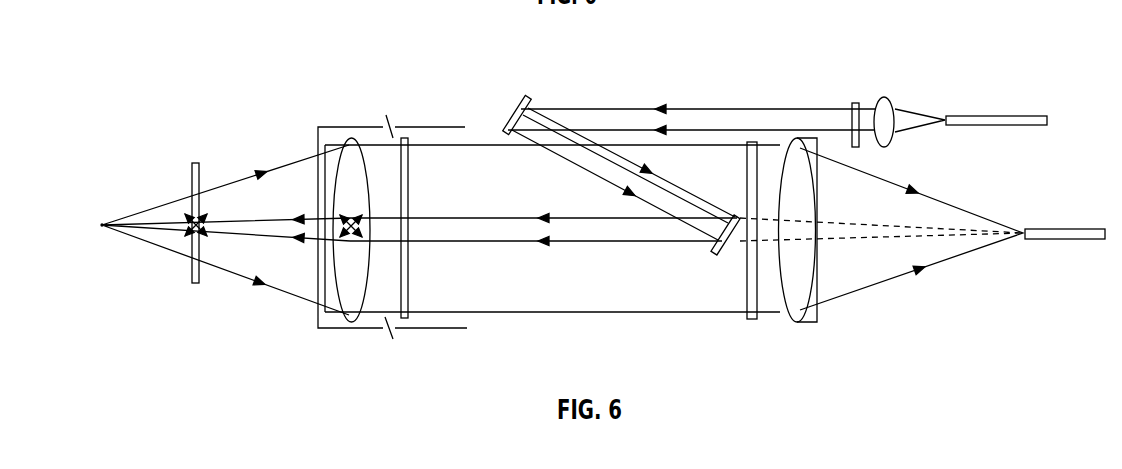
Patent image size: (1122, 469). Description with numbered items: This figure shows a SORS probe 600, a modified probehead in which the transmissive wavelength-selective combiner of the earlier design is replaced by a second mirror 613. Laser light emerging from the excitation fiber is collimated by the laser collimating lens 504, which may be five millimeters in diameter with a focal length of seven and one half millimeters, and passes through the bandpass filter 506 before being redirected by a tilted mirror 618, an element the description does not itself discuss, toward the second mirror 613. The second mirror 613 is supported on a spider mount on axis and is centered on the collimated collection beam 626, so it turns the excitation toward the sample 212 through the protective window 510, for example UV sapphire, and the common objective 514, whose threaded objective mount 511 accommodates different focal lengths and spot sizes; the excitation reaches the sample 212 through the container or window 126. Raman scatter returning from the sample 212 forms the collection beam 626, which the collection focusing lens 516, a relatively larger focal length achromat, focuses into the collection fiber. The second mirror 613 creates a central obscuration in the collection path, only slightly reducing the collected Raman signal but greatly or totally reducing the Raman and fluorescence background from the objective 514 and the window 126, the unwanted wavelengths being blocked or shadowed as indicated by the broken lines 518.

The SORS probe 600 is at (607, 63).
The sample 212 is at (95, 241).
The container or window 126 is at (193, 162).
The collimated collection beam 626 is at (250, 284).
The threaded objective mount 511 is at (356, 113).
The common objective 514 is at (350, 323).
The protective window 510 is at (409, 272).
The mirror 618 is at (517, 104).
The second mirror 613 is at (713, 255).
The collection focusing lens 516 is at (797, 148).
The broken lines 518 is at (895, 255).
The bandpass filter 506 is at (855, 102).
The laser collimating lens 504 is at (883, 98).